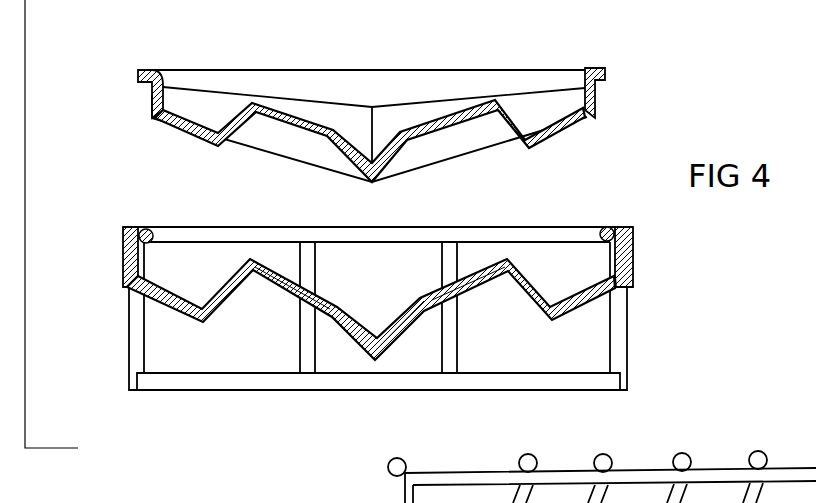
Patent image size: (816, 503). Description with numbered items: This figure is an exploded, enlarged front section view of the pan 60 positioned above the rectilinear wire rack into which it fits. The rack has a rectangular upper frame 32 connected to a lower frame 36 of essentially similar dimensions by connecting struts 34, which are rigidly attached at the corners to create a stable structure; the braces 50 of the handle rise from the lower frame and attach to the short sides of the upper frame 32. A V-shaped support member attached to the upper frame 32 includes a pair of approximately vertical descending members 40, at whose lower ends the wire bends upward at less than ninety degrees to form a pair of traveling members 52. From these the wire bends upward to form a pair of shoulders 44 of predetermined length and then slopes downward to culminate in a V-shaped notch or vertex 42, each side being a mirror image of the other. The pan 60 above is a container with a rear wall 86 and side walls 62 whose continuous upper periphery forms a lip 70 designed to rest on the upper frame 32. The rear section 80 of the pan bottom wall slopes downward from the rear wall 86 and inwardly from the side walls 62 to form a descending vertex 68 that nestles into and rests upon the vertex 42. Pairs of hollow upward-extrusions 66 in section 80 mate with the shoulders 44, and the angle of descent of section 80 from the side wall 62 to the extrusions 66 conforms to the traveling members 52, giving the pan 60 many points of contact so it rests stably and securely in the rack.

The upper frame 32 is at (487, 227).
The connecting struts 34 is at (128, 317).
The lower frame 36 is at (258, 391).
The vertical descending members 40 is at (123, 258).
The vertex 42 is at (376, 362).
The shoulders 44 is at (287, 293).
The braces 50 is at (440, 262).
The traveling members 52 is at (177, 305).
The pan 60 is at (375, 66).
The side walls 62 is at (150, 103).
The hollow upward-extrusions 66 is at (307, 132).
The vertex 68 is at (372, 132).
The lip 70 is at (138, 72).
The rear section of bottom wall 80 is at (243, 147).
The rear wall 86 is at (297, 87).